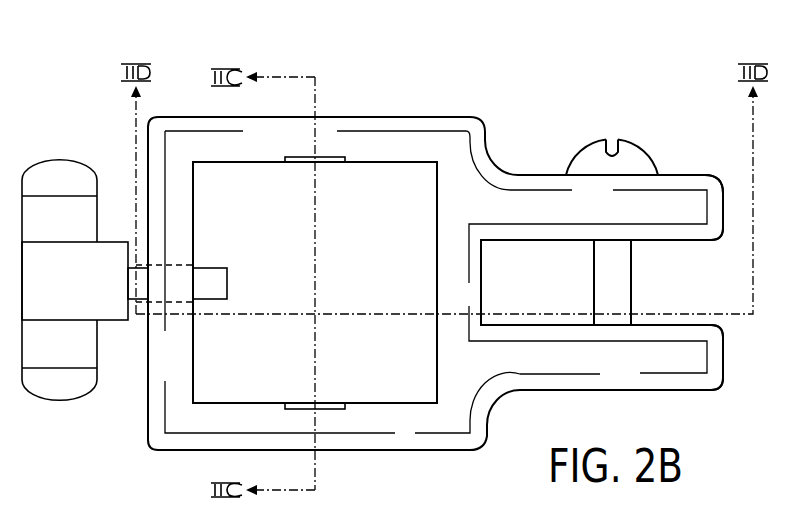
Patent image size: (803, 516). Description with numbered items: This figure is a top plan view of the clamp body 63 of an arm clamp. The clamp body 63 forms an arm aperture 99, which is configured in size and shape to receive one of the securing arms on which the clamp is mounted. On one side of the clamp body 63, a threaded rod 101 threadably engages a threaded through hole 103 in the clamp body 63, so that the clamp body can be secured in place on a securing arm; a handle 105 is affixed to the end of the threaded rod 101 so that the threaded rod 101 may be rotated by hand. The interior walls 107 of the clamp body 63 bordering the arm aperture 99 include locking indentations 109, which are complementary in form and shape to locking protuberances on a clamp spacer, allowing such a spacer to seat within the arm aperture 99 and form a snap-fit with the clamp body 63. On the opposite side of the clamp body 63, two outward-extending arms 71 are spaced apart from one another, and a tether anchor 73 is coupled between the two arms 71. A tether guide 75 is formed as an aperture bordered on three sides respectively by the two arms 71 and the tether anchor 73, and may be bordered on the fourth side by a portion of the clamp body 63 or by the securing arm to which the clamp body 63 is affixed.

The clamp body 63 is at (156, 125).
The arm aperture 99 is at (385, 231).
The threaded through hole 103 is at (182, 265).
The threaded rod 101 is at (131, 321).
The handle 105 is at (60, 392).
The interior walls 107 is at (382, 402).
The locking indentations 109 is at (303, 403).
The tether guide 75 is at (533, 283).
The tether anchor 73 is at (617, 267).
The arms 71 is at (715, 183).